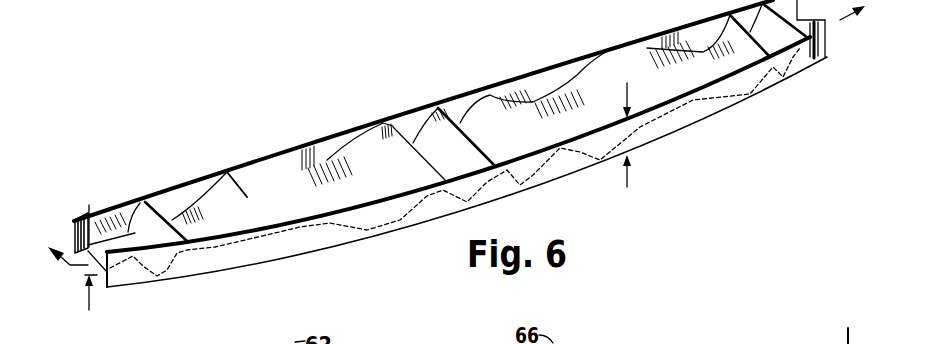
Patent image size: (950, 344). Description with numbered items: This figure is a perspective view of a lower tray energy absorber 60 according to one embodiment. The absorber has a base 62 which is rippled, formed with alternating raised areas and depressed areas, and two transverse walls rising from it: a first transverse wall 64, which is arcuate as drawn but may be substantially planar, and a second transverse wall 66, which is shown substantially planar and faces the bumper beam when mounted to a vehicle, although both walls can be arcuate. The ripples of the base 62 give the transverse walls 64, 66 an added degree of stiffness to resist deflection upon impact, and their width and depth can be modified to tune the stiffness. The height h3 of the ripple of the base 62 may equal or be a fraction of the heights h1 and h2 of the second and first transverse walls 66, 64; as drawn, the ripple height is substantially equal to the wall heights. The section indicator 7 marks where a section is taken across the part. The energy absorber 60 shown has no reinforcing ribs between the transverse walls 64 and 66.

The tray energy absorber 60 is at (156, 133).
The base 62 is at (226, 171).
The first transverse wall 64 is at (307, 237).
The second transverse wall 66 is at (330, 150).
The section line for Fig. 7 is at (451, 135).
The height of second transverse wall h1 is at (820, 9).
The height of first transverse wall h2 is at (630, 149).
The height of the ripple h3 is at (94, 308).